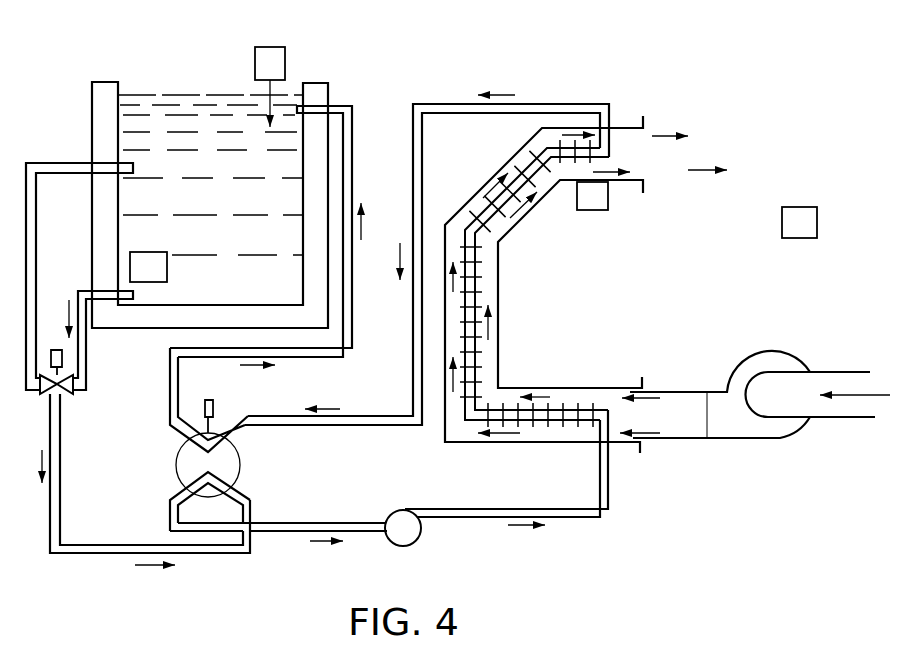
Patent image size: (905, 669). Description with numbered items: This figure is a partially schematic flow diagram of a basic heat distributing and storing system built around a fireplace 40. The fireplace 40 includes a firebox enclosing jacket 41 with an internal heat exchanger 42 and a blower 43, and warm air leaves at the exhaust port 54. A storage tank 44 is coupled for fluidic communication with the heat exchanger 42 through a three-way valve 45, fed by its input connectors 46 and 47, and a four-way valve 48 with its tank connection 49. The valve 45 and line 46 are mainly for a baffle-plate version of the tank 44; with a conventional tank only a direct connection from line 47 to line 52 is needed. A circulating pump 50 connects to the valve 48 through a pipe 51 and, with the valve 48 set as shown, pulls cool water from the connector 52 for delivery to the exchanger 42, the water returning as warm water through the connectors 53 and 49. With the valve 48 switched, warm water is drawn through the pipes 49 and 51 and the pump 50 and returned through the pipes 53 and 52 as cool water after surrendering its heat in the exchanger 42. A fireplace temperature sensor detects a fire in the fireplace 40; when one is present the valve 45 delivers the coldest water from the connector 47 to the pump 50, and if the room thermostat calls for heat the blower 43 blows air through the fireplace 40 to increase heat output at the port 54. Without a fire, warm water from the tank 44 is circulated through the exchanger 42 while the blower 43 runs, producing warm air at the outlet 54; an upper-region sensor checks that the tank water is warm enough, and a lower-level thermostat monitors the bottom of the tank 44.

The fireplace 40 is at (600, 283).
The firebox enclosing jacket 41 is at (475, 444).
The heat exchanger 42 is at (483, 283).
The blower 43 is at (748, 366).
The storage tank 44 is at (105, 86).
The three-way valve 45 is at (68, 404).
The input connector 46 is at (33, 252).
The input connector 47 is at (80, 298).
The four-way valve 48 is at (240, 468).
The tank connection 49 is at (352, 326).
The circulating pump 50 is at (417, 540).
The pipe 51 is at (320, 524).
The connector 52 is at (100, 550).
The connector 53 is at (345, 418).
The exhaust port 54 is at (648, 128).